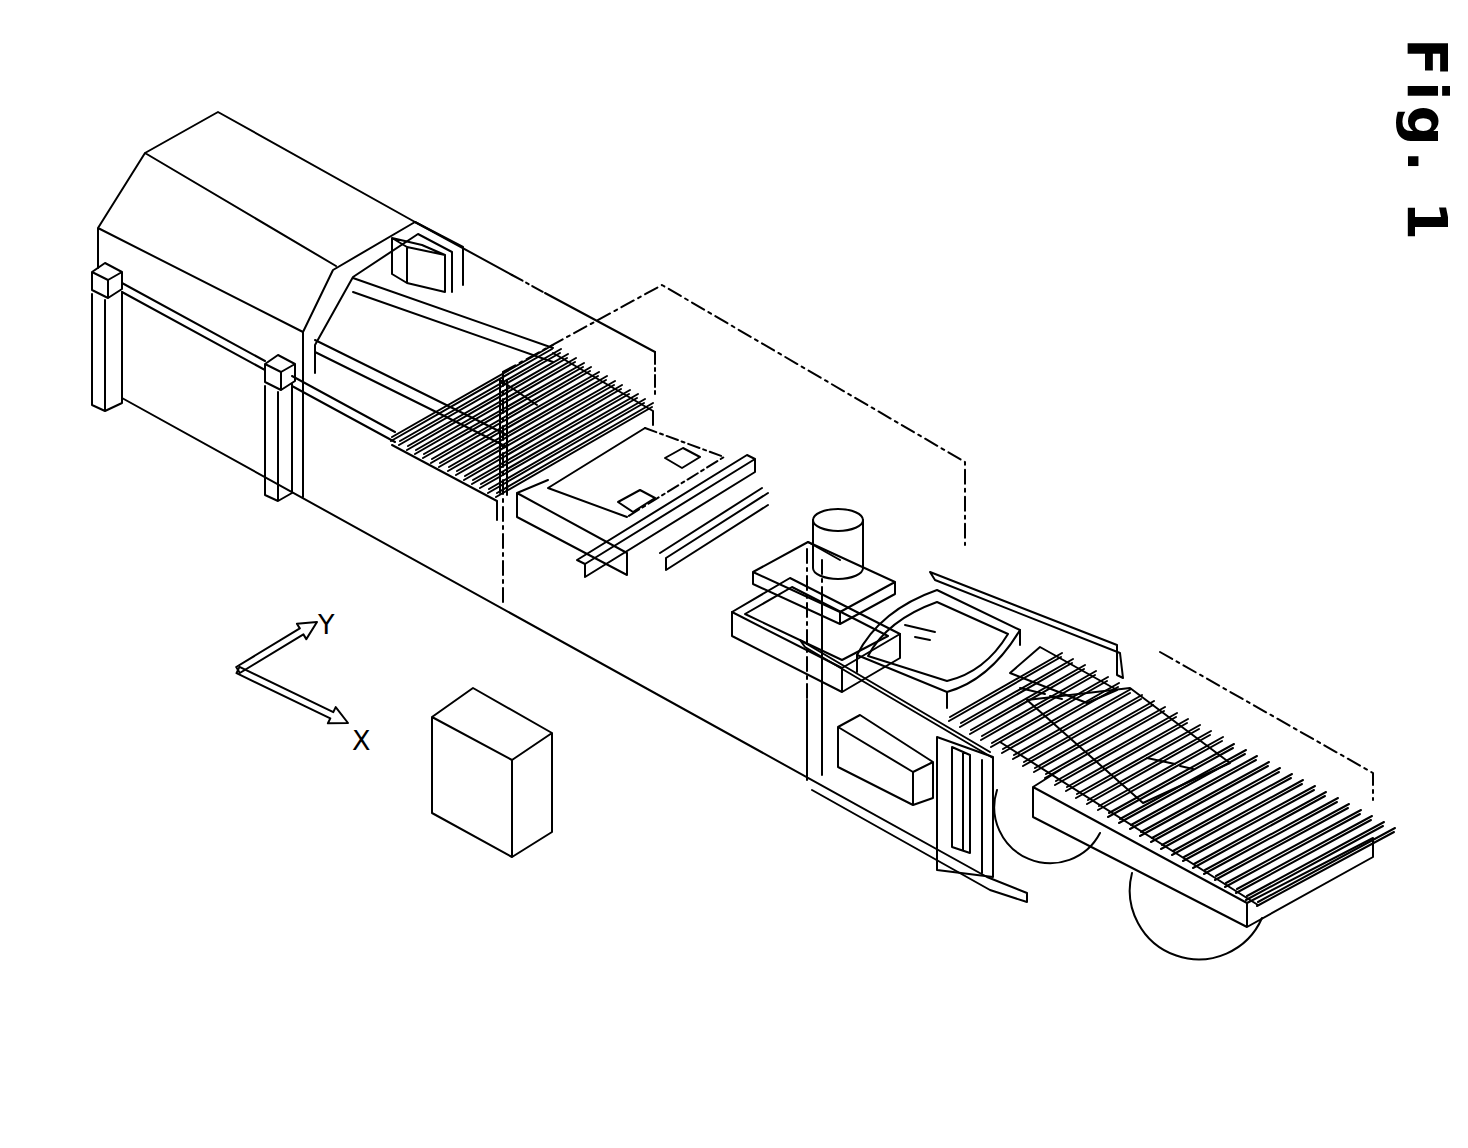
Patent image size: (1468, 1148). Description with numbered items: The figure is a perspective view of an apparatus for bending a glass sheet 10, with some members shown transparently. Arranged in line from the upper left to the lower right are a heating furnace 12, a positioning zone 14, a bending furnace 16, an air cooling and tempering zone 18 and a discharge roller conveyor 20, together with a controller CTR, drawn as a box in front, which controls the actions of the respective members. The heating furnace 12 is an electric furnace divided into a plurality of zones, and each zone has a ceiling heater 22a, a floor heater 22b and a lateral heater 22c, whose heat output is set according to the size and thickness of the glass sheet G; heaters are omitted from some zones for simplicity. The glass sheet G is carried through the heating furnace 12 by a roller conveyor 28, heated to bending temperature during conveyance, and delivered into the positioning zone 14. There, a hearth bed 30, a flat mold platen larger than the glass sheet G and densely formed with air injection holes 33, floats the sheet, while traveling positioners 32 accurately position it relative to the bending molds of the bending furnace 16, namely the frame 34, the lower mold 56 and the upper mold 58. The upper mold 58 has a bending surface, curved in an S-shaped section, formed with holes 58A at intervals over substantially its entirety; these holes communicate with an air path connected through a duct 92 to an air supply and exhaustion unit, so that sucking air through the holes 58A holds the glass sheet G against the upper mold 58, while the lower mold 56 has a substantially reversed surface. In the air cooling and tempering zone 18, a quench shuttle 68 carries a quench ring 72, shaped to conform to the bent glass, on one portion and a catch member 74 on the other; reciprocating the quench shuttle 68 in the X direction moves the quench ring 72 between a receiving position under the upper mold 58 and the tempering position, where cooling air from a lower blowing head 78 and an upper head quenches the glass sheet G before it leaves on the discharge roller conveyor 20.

The apparatus for bending a glass sheet 10 is at (608, 238).
The heating furnace 12 is at (405, 200).
The positioning zone 14 is at (688, 382).
The bending furnace 16 is at (772, 347).
The air cooling and tempering zone 18 is at (842, 717).
The discharge roller conveyor 20 is at (1125, 700).
The ceiling heater 22a is at (392, 250).
The floor heater 22b is at (410, 380).
The lateral heater 22c is at (433, 270).
The roller conveyor 28 is at (445, 440).
The hearth bed 30 is at (584, 520).
The traveling positioners 32 is at (722, 456).
The air injection holes 33 is at (530, 507).
The frame 34 is at (778, 648).
The lower mold 56 is at (752, 642).
The upper mold 58 is at (888, 572).
The holes 58A is at (862, 585).
The quench shuttle 68 is at (1055, 615).
The quench ring 72 is at (968, 600).
The catch member 74 is at (1118, 655).
The lower blowing head 78 is at (897, 712).
The duct 92 is at (836, 522).
The glass sheet G is at (656, 452).
The controller CTR is at (552, 800).